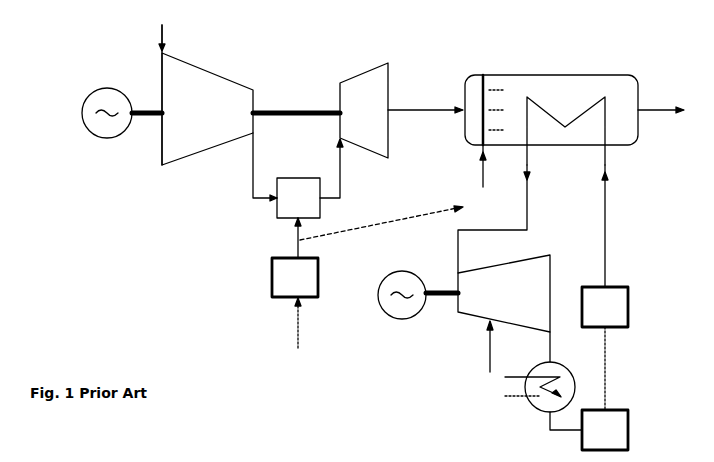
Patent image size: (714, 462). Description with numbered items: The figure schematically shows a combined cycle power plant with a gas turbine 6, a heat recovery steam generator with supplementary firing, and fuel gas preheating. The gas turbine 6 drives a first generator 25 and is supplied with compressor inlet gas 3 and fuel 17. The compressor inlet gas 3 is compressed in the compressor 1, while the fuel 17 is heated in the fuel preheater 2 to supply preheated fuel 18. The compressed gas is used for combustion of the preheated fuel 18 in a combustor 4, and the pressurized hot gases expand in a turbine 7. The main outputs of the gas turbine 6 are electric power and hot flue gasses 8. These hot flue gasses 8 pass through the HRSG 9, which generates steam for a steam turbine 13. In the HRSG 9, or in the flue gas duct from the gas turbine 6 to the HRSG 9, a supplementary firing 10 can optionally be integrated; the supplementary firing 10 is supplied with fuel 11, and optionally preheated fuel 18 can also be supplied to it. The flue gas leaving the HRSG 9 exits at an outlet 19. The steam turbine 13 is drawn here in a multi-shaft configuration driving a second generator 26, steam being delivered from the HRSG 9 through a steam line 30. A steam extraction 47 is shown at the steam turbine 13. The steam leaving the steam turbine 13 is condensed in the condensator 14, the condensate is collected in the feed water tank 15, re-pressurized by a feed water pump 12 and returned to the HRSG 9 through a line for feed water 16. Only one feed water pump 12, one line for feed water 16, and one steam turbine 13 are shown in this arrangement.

The compressor 1 is at (207, 95).
The fuel preheater 2 is at (295, 277).
The compressor inlet gas 3 is at (163, 35).
The combustor 4 is at (298, 175).
The gas turbine 6 is at (296, 88).
The turbine 7 is at (364, 110).
The hot flue gasses 8 is at (437, 110).
The HRSG 9 is at (551, 120).
The supplementary firing 10 is at (492, 88).
The fuel 11 is at (479, 180).
The feed water pump 12 is at (605, 246).
The steam turbine 13 is at (504, 308).
The condensator 14 is at (545, 400).
The feed water tank 15 is at (589, 430).
The feed water 16 is at (607, 340).
The fuel 17 is at (298, 335).
The preheated fuel 18 is at (298, 250).
The stack outlet 19 is at (670, 108).
The first generator 25 is at (107, 138).
The second generator 26 is at (402, 305).
The steam line 30 is at (530, 203).
The steam extraction line 47 is at (479, 346).